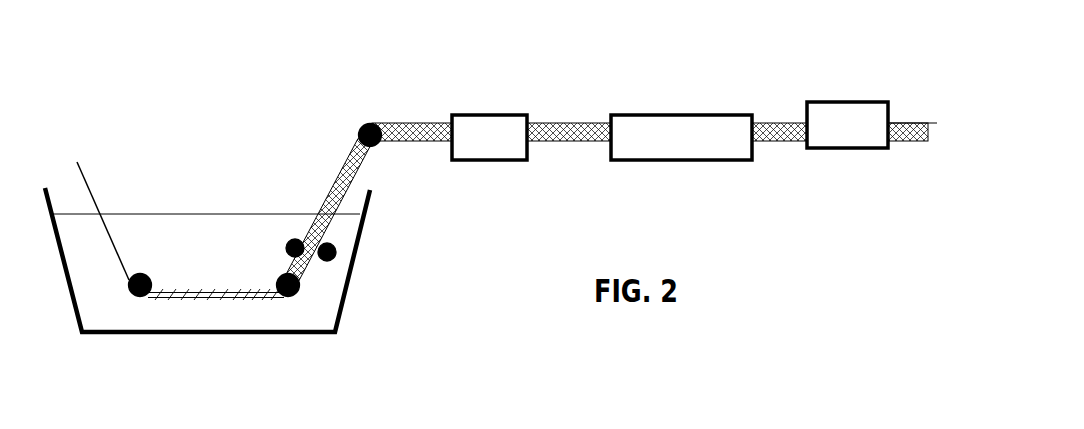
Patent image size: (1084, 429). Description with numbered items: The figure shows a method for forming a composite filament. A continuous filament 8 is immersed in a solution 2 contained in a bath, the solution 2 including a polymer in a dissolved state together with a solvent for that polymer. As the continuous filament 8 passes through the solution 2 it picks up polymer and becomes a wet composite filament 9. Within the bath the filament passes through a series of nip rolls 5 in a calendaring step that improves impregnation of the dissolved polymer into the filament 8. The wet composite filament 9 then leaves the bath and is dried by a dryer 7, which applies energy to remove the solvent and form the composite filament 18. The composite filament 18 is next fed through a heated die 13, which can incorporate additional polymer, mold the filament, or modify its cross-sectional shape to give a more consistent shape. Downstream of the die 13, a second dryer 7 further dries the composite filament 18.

The solution 2 is at (212, 264).
The nip rolls 5 is at (294, 240).
The dryer 7 is at (475, 115).
The continuous filament 8 is at (91, 190).
The wet composite filament 9 is at (398, 123).
The die 13 is at (667, 161).
The composite filament 18 is at (916, 123).